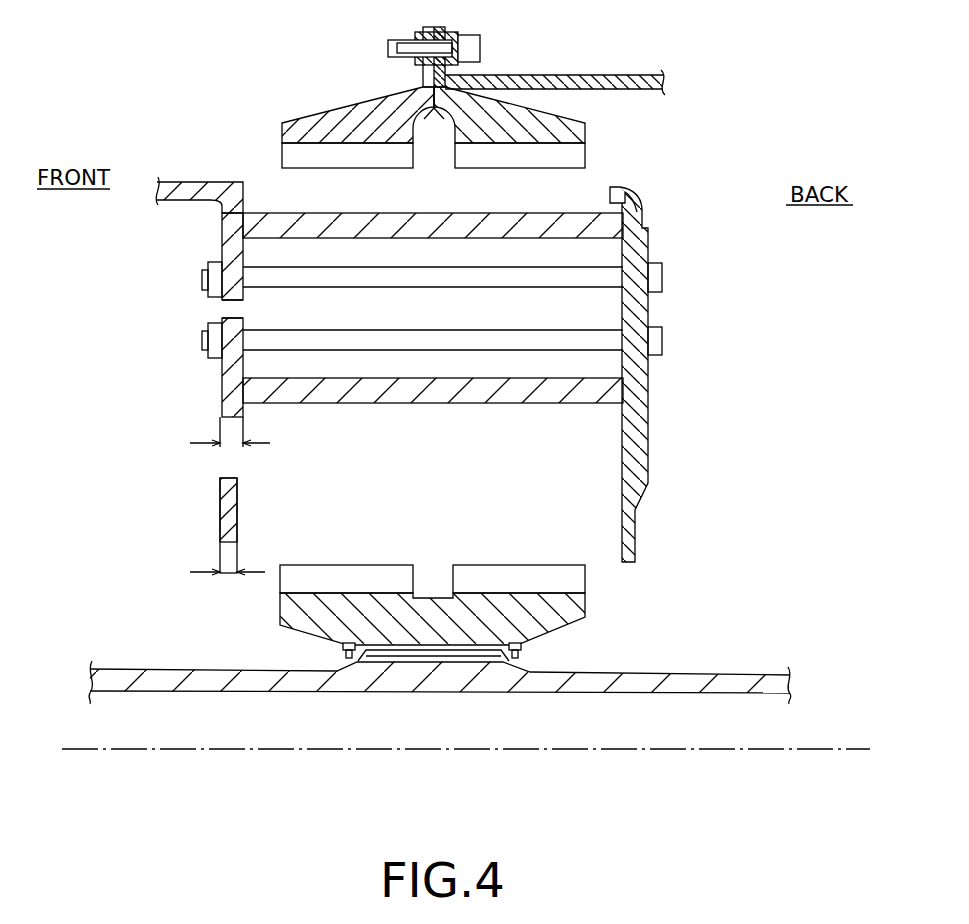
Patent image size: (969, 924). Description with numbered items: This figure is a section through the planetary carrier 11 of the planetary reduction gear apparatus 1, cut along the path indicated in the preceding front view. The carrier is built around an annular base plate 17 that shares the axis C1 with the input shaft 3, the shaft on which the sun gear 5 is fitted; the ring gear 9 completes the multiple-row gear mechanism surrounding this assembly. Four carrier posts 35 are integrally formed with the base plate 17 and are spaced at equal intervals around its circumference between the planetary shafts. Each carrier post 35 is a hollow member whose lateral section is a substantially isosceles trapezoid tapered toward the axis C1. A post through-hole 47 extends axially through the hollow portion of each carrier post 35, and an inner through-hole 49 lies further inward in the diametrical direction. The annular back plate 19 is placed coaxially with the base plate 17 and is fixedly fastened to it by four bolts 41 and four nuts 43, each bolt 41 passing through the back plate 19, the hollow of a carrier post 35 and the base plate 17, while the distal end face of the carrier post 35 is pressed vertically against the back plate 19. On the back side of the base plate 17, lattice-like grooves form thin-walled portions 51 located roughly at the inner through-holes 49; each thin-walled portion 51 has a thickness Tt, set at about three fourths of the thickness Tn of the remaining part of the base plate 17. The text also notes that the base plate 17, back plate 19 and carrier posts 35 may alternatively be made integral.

The planetary reduction gear apparatus 1 is at (691, 112).
The input shaft 3 is at (750, 676).
The sun gear 5 is at (586, 617).
The ring gear 9 is at (586, 130).
The planetary carrier 11 is at (435, 362).
The base plate 17 is at (222, 237).
The back plate 19 is at (643, 200).
The carrier post 35 is at (277, 212).
The bolt 41 is at (662, 277).
The nut 43 is at (202, 275).
The post through-hole 47 is at (225, 312).
The inner through-hole 49 is at (222, 466).
The thin-walled portion 51 is at (220, 513).
The axis C1 is at (781, 749).
The thickness of base plate Tn is at (232, 446).
The thickness of thin-walled portion Tt is at (227, 589).